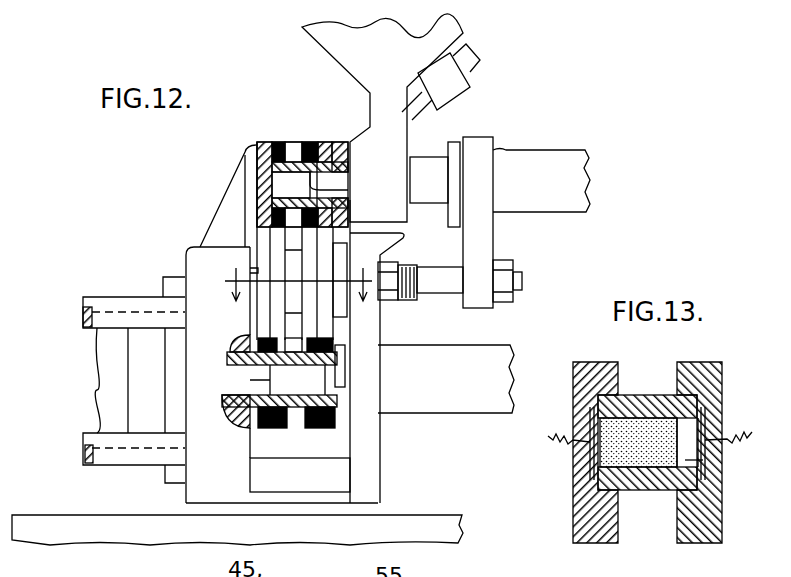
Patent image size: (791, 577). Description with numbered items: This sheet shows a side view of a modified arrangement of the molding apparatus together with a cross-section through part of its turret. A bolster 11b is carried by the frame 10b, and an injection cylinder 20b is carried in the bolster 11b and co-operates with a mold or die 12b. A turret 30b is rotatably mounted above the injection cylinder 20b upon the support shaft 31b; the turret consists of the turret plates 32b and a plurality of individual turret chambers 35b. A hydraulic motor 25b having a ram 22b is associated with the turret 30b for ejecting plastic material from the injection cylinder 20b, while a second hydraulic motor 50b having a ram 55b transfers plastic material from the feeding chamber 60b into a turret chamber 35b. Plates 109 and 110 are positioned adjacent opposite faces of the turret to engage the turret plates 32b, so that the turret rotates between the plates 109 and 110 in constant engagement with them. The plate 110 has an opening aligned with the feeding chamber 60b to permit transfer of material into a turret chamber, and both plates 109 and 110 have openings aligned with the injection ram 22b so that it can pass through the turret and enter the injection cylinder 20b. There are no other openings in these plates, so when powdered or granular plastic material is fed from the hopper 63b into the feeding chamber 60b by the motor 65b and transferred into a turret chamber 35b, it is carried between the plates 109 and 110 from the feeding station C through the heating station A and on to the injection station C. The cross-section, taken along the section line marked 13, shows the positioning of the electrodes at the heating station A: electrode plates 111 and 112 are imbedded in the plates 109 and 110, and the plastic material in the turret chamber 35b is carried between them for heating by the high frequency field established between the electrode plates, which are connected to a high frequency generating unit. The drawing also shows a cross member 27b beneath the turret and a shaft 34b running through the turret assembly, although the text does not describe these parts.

In FIG. 12, the frame 10b is at (83, 497).
In FIG. 12, the bolster 11b is at (200, 493).
In FIG. 12, the mold or die 12b is at (156, 364).
In FIG. 12, the section line 13- 13 is at (302, 284).
In FIG. 12, the injection cylinder 20b is at (226, 396).
In FIG. 12, the ram 22b is at (330, 380).
In FIG. 12, the hydraulic motor 25b is at (471, 394).
In FIG. 12, the cross member 27b is at (303, 476).
In FIG. 12, the turret 30b is at (277, 250).
In FIG. 13, the turret 30b is at (639, 346).
In FIG. 12, the support shaft 31b is at (250, 274).
In FIG. 12, the turret plates 32b is at (312, 141).
In FIG. 12, the shaft 34b is at (293, 297).
In FIG. 12, the turret chamber 35b is at (322, 184).
In FIG. 13, the turret chamber 35b is at (645, 490).
In FIG. 12, the hydraulic motor 50b is at (540, 187).
In FIG. 12, the ram 55b is at (446, 182).
In FIG. 12, the feeding chamber 60b is at (365, 123).
In FIG. 12, the hopper 63b is at (403, 54).
In FIG. 12, the motor 65b is at (456, 95).
In FIG. 12, the plate 109 is at (262, 135).
In FIG. 12, the plate 110 is at (318, 142).
In FIG. 13, the electrode plate 111 is at (578, 410).
In FIG. 13, the electrode plate 112 is at (715, 416).
In FIG. 12, the feeding station / injection station C is at (295, 196).
In FIG. 13, the heating station A is at (714, 460).